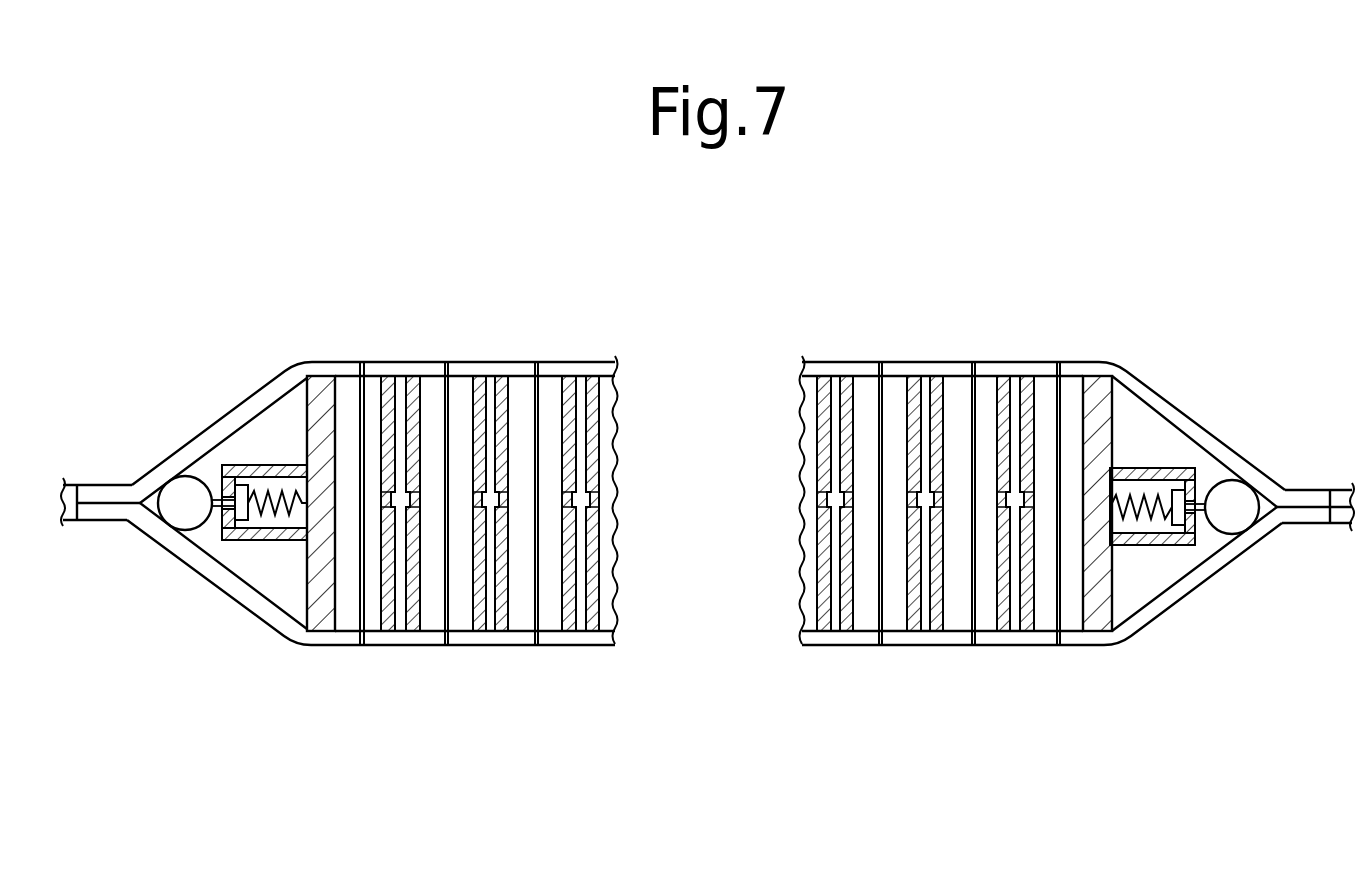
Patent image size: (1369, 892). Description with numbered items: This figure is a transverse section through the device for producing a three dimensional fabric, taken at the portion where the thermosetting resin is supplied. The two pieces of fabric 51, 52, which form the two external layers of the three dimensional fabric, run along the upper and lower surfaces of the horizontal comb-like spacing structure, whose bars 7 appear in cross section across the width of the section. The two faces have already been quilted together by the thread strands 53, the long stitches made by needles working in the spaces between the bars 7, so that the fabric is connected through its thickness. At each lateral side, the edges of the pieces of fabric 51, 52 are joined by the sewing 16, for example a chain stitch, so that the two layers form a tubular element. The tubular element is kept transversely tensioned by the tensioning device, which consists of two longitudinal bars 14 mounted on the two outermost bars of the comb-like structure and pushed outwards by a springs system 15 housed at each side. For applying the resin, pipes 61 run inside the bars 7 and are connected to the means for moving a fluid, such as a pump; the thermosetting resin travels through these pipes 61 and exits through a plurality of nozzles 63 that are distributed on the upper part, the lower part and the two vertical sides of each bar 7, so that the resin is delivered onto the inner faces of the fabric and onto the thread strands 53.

The bars 7 is at (381, 640).
The longitudinal bars 14 is at (178, 500).
The springs system 15 is at (268, 500).
The sewing 16 is at (80, 512).
The piece of fabric 51 is at (835, 372).
The piece of fabric 52 is at (905, 637).
The thread strands 53 is at (537, 640).
The pipes 61 is at (493, 500).
The nozzles 63 is at (398, 385).